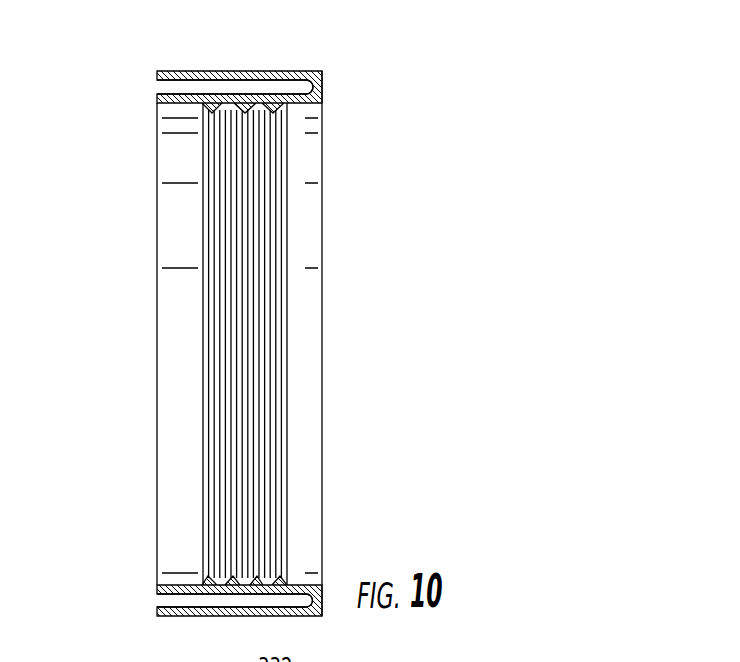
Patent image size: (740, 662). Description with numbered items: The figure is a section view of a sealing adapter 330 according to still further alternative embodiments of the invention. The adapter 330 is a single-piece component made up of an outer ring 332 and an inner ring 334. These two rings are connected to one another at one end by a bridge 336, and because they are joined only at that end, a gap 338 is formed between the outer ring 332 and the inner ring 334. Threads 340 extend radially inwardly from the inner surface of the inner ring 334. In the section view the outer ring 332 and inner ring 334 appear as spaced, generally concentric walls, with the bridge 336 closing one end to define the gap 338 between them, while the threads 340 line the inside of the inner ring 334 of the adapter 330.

The adapter 330 is at (242, 341).
The outer ring 332 is at (270, 66).
The inner ring 334 is at (157, 100).
The bridge 336 is at (323, 84).
The gap 338 is at (158, 84).
The threads 340 is at (273, 345).